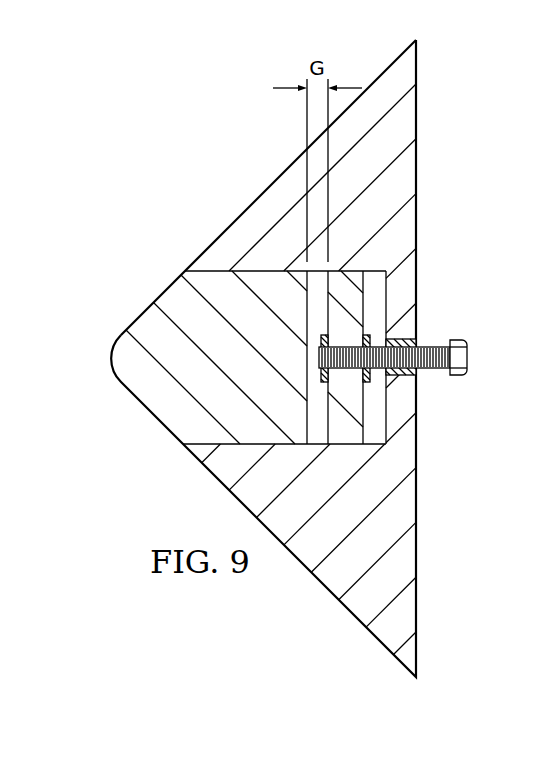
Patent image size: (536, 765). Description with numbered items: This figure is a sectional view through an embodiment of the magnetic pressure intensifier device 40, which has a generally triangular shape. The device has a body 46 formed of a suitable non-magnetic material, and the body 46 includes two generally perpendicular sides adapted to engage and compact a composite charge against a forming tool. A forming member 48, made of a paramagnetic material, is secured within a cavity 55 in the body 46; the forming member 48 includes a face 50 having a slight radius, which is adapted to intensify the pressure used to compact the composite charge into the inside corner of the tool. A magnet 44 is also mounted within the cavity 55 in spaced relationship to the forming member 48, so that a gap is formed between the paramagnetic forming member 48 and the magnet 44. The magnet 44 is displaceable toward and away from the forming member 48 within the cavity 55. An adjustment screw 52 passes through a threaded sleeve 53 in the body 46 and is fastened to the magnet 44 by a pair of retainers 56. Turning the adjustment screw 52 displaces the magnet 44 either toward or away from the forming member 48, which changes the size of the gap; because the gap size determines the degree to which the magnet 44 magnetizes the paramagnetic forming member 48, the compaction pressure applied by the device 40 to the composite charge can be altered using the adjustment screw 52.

The magnetic pressure intensifier device 40 is at (258, 187).
The magnet 44 is at (357, 405).
The body 46 is at (292, 358).
The forming member 48 is at (145, 322).
The face 50 is at (280, 358).
The adjustment screw 52 is at (468, 358).
The threaded sleeve 53 is at (407, 339).
The cavity 55 is at (317, 445).
The retainers 56 is at (322, 378).